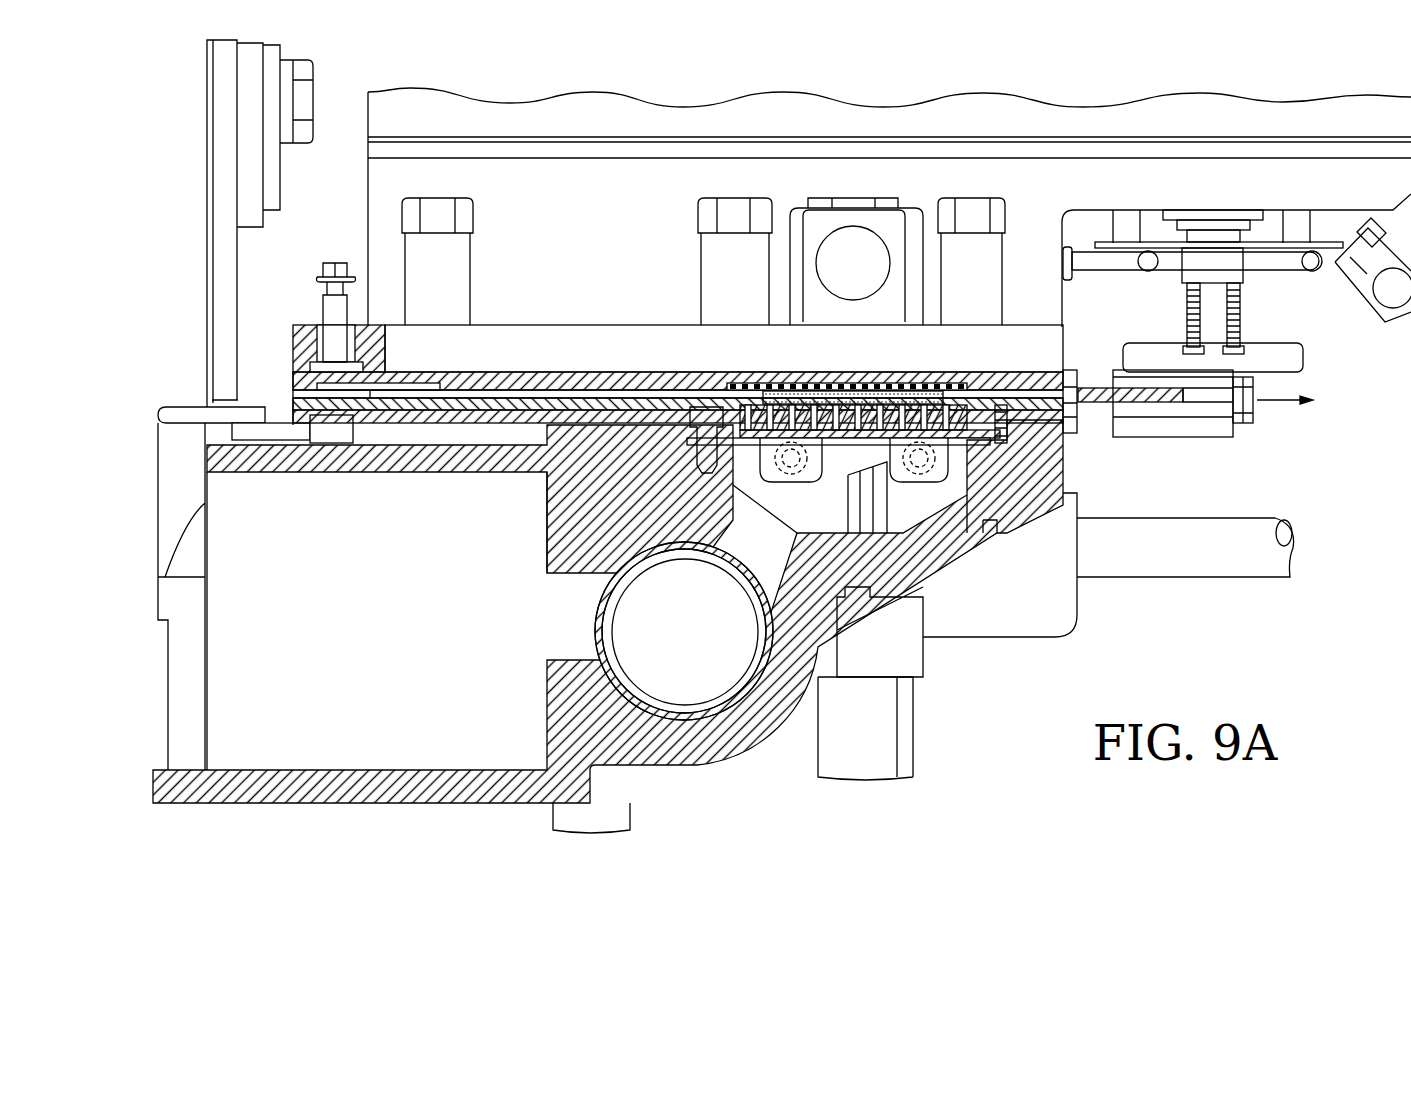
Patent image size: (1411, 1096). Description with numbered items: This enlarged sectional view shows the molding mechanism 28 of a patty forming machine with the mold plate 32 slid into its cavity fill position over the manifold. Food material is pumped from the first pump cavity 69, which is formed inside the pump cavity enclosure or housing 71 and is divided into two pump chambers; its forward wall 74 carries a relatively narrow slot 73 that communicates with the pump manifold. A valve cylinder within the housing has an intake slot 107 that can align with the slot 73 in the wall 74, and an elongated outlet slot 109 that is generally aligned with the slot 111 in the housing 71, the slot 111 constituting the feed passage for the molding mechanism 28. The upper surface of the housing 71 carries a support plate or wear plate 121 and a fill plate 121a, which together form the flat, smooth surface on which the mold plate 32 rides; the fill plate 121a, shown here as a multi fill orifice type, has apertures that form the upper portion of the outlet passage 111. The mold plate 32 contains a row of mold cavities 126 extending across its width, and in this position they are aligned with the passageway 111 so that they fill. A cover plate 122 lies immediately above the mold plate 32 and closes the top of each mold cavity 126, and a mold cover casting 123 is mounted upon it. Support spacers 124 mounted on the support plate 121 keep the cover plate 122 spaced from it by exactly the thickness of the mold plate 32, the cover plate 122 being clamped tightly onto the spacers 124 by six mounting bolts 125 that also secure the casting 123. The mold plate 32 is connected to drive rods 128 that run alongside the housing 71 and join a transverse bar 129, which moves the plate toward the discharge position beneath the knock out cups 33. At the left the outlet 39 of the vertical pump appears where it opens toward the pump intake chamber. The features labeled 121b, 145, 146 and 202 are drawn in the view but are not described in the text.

The molding mechanism 28 is at (838, 448).
The mold plate 32 is at (1097, 412).
The knock out cups 33 is at (1275, 343).
The outlet 39 is at (170, 480).
The first pump cavity 69 is at (371, 632).
The pump cavity enclosure or housing 71 is at (975, 558).
The slot 73 is at (553, 644).
The forward wall 74 is at (547, 697).
The intake slot 107 is at (607, 657).
The outlet slot 109 is at (714, 555).
The slot 111 is at (773, 578).
The support plate or wear plate 121 is at (577, 388).
The fill plate 121a is at (1030, 388).
The plate slots 121b is at (953, 425).
The cover plate 122 is at (547, 372).
The mold cover casting or housing 123 is at (503, 325).
The support spacers 124 is at (292, 405).
The mounting bolts 125 is at (440, 200).
The mold cavities 126 is at (783, 392).
The drive rods 128 is at (1097, 378).
The transverse bar 129 is at (1232, 438).
The clamp block 145 is at (1243, 287).
The rod 146 is at (1247, 263).
The recess 202 is at (1187, 396).